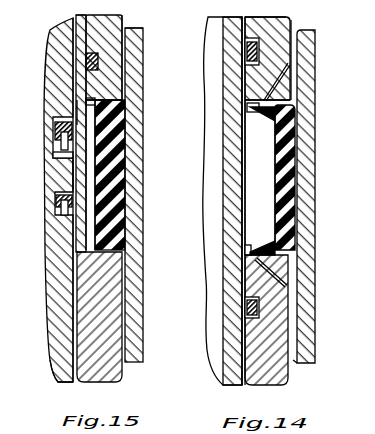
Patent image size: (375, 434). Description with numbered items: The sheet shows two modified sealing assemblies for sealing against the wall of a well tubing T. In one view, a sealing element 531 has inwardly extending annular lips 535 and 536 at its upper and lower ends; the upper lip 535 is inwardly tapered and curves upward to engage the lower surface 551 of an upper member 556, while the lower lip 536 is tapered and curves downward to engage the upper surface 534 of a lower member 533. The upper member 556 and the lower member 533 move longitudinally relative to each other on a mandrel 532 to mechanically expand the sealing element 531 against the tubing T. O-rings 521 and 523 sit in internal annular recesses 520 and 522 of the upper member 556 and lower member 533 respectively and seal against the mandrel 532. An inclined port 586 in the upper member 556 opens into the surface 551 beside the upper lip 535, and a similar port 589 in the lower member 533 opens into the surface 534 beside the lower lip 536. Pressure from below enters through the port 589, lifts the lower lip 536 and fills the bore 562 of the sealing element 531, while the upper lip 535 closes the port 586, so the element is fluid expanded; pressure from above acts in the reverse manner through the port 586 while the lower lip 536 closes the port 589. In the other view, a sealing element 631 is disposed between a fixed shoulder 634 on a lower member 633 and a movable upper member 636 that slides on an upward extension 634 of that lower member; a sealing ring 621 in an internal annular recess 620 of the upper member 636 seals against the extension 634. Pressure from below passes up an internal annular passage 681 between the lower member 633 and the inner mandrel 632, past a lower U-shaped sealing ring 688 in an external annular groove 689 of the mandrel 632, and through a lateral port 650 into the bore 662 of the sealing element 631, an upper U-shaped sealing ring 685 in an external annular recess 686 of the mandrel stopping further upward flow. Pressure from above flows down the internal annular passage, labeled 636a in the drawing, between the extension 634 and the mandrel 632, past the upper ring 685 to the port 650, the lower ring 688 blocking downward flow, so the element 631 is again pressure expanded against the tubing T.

In FIG. 14, the internal annular recess 520 is at (242, 47).
In FIG. 14, the O-ring 521 is at (245, 50).
In FIG. 14, the internal annular recess 522 is at (245, 316).
In FIG. 14, the O-ring 523 is at (245, 297).
In FIG. 14, the sealing element 531 is at (287, 128).
In FIG. 14, the mandrel 532 is at (225, 153).
In FIG. 14, the lower member 533 is at (280, 307).
In FIG. 14, the upper surface 534 is at (247, 248).
In FIG. 14, the upper lip 535 is at (258, 115).
In FIG. 14, the lower lip 536 is at (243, 226).
In FIG. 14, the lower surface 551 is at (245, 100).
In FIG. 14, the upper member 556 is at (285, 20).
In FIG. 14, the bore 562 is at (275, 163).
In FIG. 14, the port 586 is at (314, 55).
In FIG. 14, the port 589 is at (288, 262).
In FIG. 15, the tubing T is at (137, 92).
In FIG. 14, the tubing T is at (312, 78).
In FIG. 15, the internal annular recess 620 is at (141, 31).
In FIG. 15, the sealing ring 621 is at (86, 74).
In FIG. 15, the sealing element 631 is at (115, 132).
In FIG. 15, the inner mandrel 632 is at (52, 255).
In FIG. 15, the lower member 633 is at (115, 307).
In FIG. 15, the fixed shoulder 634 is at (85, 48).
In FIG. 15, the upper member 636 is at (113, 72).
In FIG. 15, the upper shoulder 636a is at (73, 17).
In FIG. 15, the lateral port 650 is at (85, 173).
In FIG. 15, the bore 662 is at (80, 110).
In FIG. 15, the internal annular passage 681 is at (65, 335).
In FIG. 15, the upper U-shaped sealing ring 685 is at (57, 132).
In FIG. 15, the external annular recess 686 is at (55, 152).
In FIG. 15, the lower U-shaped annular sealing ring 688 is at (53, 200).
In FIG. 15, the external annular groove 689 is at (55, 217).